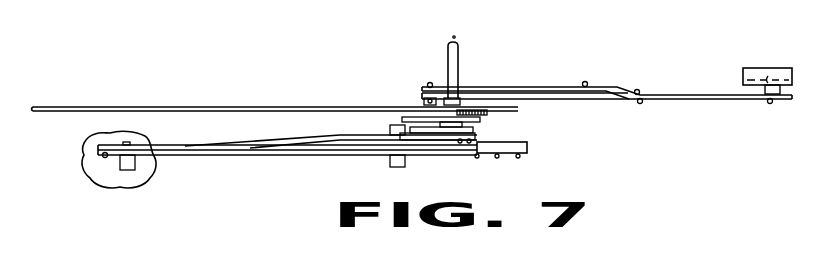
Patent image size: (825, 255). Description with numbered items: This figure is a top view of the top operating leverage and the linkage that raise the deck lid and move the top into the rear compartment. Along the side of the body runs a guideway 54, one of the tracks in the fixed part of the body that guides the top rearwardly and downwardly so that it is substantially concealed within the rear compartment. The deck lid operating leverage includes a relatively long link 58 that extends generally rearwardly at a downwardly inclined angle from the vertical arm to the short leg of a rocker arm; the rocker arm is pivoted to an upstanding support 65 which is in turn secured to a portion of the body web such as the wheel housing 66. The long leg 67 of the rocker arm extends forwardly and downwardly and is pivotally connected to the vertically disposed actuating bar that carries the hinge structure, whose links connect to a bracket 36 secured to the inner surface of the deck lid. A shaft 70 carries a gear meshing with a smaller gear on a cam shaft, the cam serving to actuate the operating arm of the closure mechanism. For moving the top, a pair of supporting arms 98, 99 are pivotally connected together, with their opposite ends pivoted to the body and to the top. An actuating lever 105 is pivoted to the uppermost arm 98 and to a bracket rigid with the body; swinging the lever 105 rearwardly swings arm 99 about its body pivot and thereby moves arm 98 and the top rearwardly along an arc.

The guideway 54 is at (212, 107).
The link 58 is at (291, 137).
The upstanding support 65 is at (120, 167).
The wheel housing 66 is at (143, 176).
The long leg of rocker arm 67 is at (320, 157).
The shaft 70 is at (458, 56).
The supporting arm 99 is at (522, 88).
The actuating lever 105 is at (573, 101).
The bracket 36 is at (535, 137).
The supporting arm 98 is at (667, 92).